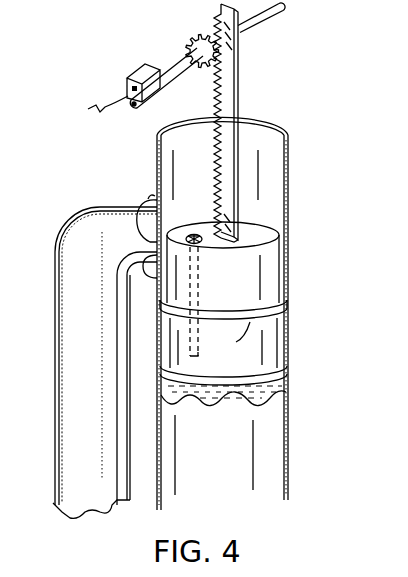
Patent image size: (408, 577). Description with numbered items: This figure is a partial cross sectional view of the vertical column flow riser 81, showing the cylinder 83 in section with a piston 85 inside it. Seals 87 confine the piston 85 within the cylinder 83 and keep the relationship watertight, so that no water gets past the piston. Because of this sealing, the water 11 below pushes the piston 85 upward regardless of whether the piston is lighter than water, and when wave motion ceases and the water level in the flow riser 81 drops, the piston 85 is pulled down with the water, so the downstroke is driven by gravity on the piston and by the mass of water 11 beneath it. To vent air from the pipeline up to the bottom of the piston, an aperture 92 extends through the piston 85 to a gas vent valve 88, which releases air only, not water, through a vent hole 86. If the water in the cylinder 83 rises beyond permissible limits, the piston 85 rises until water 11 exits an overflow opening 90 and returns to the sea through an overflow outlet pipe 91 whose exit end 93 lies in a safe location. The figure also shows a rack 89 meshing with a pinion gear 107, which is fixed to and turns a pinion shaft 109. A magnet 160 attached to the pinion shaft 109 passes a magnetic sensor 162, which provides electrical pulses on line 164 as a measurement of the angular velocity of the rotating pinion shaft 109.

The water 11 is at (292, 378).
The vertical column flow riser 81 is at (303, 160).
The cylinder 83 is at (292, 252).
The piston 85 is at (268, 289).
The vent hole 86 is at (193, 236).
The seals 87 is at (240, 376).
The gas vent valve 88 is at (203, 242).
The rack 89 is at (232, 92).
The overflow opening 90 is at (143, 220).
The overflow outlet pipe 91 is at (80, 242).
The aperture 92 is at (198, 287).
The exit end 93 is at (100, 516).
The pinion gear 107 is at (193, 44).
The pinion shaft 109 is at (274, 22).
The magnet 160 is at (168, 87).
The magnetic sensor 162 is at (133, 73).
The line 164 is at (100, 112).